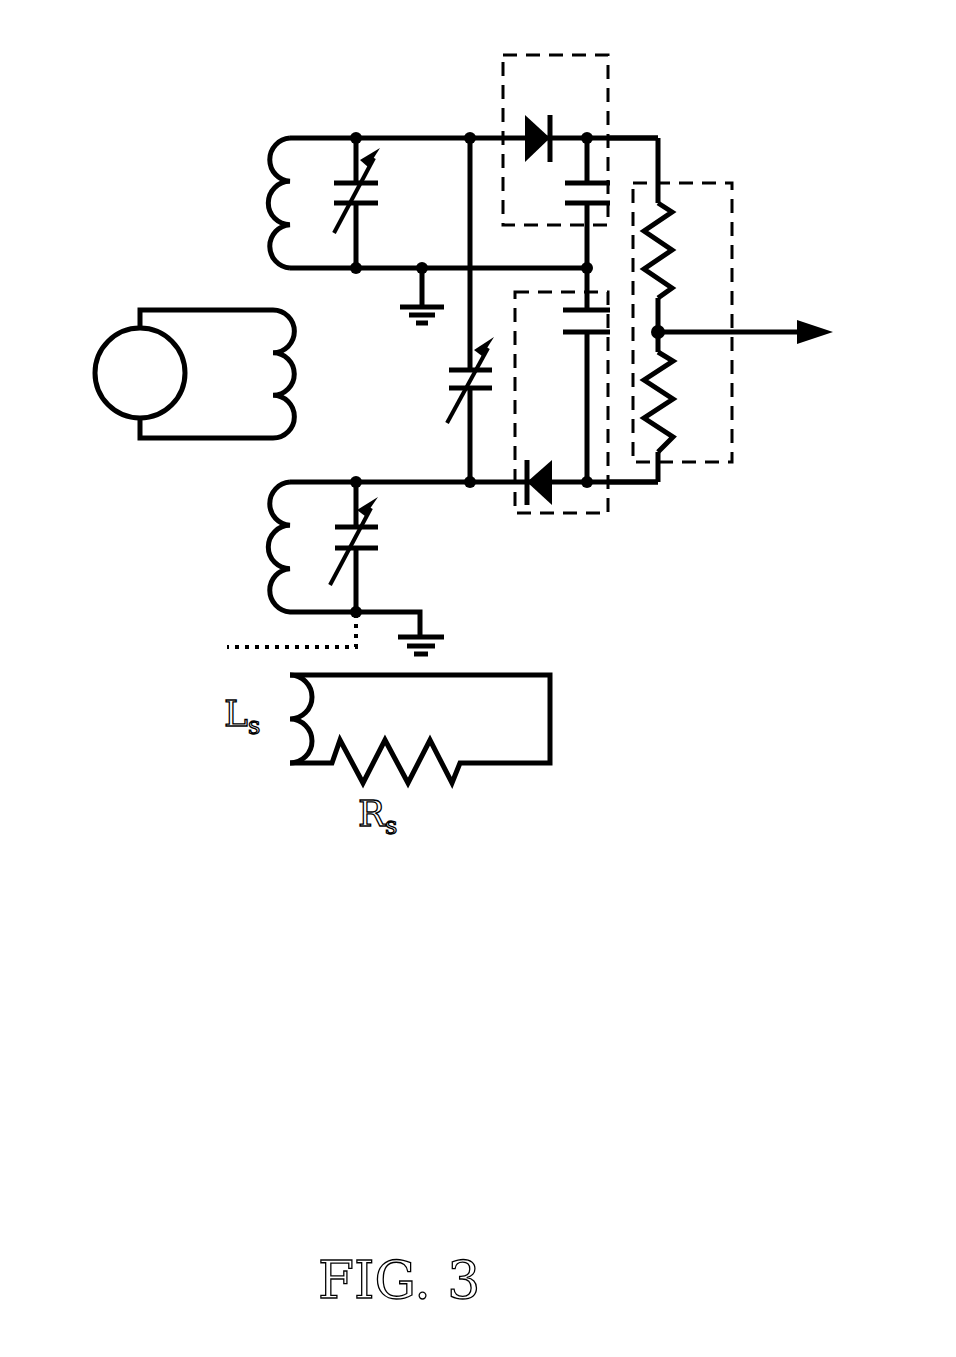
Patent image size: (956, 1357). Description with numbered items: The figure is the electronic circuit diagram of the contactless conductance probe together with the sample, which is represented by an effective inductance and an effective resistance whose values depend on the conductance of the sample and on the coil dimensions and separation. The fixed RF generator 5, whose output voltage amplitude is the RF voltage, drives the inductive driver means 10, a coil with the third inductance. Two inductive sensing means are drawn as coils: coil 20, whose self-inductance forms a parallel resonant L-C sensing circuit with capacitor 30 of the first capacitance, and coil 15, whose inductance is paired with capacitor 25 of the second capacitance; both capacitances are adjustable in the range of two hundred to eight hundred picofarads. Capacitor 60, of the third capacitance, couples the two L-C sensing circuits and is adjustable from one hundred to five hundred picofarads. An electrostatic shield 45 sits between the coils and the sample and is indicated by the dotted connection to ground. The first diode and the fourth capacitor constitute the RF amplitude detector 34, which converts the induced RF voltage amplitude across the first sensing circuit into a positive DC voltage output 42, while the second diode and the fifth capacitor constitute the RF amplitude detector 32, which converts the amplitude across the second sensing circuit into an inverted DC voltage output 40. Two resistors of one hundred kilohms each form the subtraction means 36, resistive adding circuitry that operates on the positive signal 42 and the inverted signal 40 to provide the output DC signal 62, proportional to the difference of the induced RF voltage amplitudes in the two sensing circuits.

The RF generator 5 is at (168, 354).
The inductive driver means 10 is at (256, 351).
The inductive sensing means 15 is at (316, 554).
The inductive sensing means 20 is at (252, 169).
The capacitor 25 is at (363, 530).
The capacitor 30 is at (361, 182).
The RF amplitude detector 32 is at (575, 435).
The RF amplitude detector 34 is at (532, 137).
The subtraction means 36 is at (708, 364).
The DC voltage output 40 is at (633, 524).
The DC voltage output 42 is at (633, 99).
The electrostatic shield 45 is at (277, 602).
The capacitor 60 is at (435, 310).
The DC signal V_out 62 is at (743, 350).